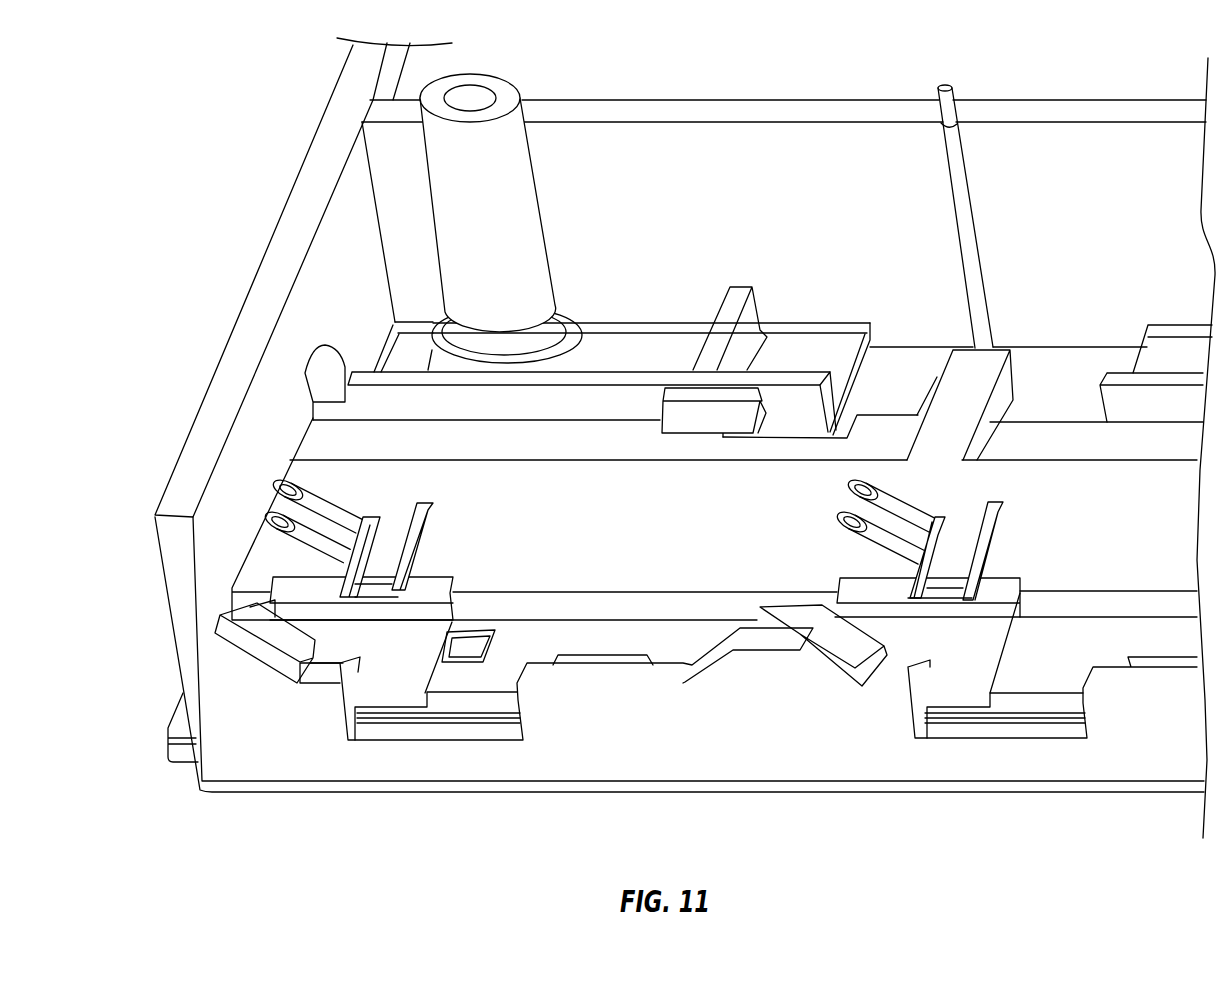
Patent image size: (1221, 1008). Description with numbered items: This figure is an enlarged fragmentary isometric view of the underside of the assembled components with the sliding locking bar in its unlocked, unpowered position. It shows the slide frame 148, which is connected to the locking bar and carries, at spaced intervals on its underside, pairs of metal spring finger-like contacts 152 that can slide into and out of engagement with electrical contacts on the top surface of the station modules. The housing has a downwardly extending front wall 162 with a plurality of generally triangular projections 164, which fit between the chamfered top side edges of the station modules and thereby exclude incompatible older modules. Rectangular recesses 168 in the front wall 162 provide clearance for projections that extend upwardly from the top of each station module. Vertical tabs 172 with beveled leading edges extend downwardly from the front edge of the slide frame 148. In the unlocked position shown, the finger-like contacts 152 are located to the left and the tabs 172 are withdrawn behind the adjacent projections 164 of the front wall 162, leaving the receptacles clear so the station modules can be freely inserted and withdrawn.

The slide frame 148 is at (666, 550).
The spring finger-like contacts 152 is at (302, 530).
The front wall 162 is at (643, 747).
The projections 164 is at (232, 658).
The rectangular recesses 168 is at (447, 732).
The vertical tabs 172 is at (287, 630).